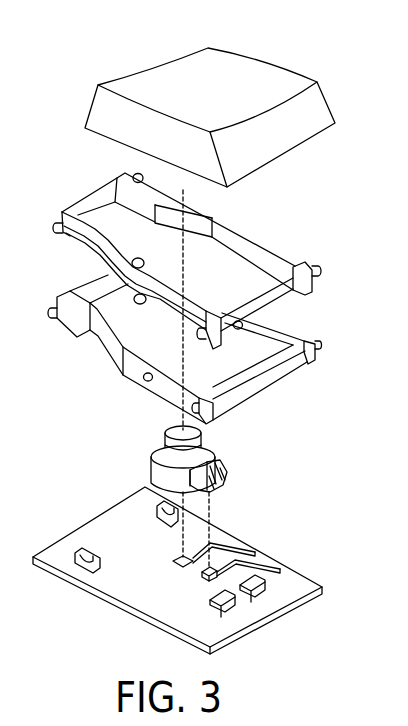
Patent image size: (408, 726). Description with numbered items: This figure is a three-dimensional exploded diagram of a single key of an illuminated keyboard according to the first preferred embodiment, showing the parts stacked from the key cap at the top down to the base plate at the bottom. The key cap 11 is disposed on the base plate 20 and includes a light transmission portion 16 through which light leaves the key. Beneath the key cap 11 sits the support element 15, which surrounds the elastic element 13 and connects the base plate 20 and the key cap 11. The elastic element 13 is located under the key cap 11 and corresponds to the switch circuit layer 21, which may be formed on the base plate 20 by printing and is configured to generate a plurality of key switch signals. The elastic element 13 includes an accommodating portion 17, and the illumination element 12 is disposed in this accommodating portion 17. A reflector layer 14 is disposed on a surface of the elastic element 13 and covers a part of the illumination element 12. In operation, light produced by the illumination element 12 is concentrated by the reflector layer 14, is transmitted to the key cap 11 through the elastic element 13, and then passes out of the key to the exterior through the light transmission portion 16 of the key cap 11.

The key cap 11 is at (187, 110).
The light transmission portion 16 is at (247, 78).
The support element 15 is at (43, 175).
The elastic element 13 is at (192, 449).
The reflector layer 14 is at (218, 455).
The accommodating portion 17 is at (227, 473).
The base plate 20 is at (177, 570).
The switch circuit layer 21 is at (232, 548).
The illumination element 12 is at (205, 572).